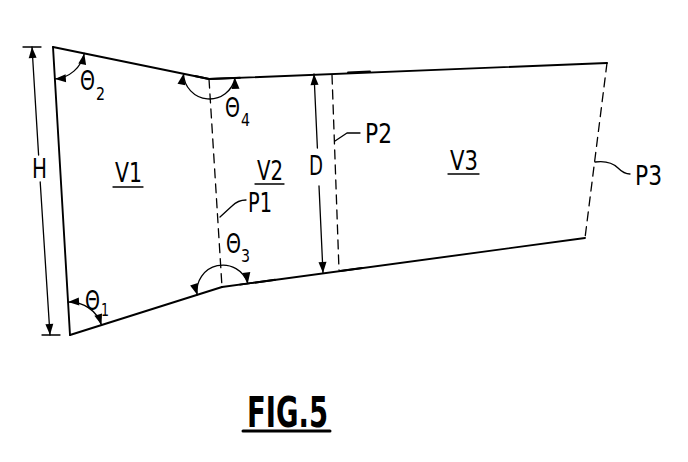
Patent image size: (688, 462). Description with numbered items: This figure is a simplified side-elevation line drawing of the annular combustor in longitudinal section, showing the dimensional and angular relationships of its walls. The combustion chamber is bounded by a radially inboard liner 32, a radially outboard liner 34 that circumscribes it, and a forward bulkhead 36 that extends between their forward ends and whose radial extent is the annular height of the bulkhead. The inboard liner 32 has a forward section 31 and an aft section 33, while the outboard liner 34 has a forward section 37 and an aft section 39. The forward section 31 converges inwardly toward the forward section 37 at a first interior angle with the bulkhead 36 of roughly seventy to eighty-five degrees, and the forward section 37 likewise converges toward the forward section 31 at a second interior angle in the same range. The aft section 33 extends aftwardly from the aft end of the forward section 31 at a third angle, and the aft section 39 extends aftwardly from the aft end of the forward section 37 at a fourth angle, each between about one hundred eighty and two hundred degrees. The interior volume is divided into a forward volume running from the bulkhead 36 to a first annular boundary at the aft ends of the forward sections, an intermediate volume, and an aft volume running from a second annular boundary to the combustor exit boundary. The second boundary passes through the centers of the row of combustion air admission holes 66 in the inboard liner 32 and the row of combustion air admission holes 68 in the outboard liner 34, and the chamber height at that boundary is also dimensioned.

The forward section of the inboard liner 31 is at (147, 312).
The radially inboard liner 32 is at (259, 284).
The aft section of the inboard liner 33 is at (415, 263).
The radially outboard liner 34 is at (230, 77).
The forward bulkhead 36 is at (58, 117).
The forward section of the outboard liner 37 is at (133, 63).
The aft section of the outboard liner 39 is at (443, 70).
The combustion air admission holes in the inboard liner 66 is at (350, 270).
The combustion air admission holes in the outboard liner 68 is at (358, 72).